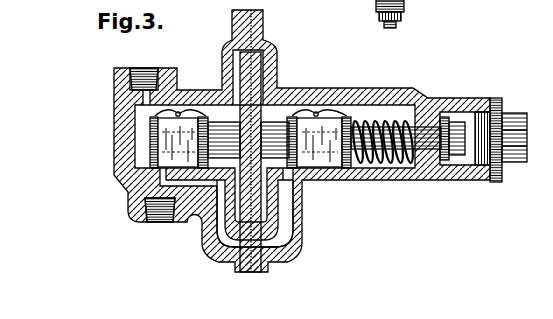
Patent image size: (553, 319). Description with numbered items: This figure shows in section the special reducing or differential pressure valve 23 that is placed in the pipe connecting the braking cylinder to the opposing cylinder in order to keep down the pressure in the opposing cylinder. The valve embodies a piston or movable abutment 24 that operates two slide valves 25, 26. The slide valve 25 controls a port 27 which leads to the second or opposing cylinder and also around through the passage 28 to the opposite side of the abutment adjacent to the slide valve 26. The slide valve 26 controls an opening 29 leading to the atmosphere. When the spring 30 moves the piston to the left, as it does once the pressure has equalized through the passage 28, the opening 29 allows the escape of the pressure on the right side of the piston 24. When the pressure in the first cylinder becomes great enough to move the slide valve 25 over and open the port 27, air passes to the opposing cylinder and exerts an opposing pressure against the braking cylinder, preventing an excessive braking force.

The reducing valve 23 is at (300, 236).
The piston or movable abutment 24 is at (250, 203).
The slide valve 25 is at (163, 162).
The slide valve 26 is at (316, 132).
The port 27 is at (128, 192).
The passage 28 is at (210, 251).
The opening 29 is at (344, 170).
The spring 30 is at (395, 122).